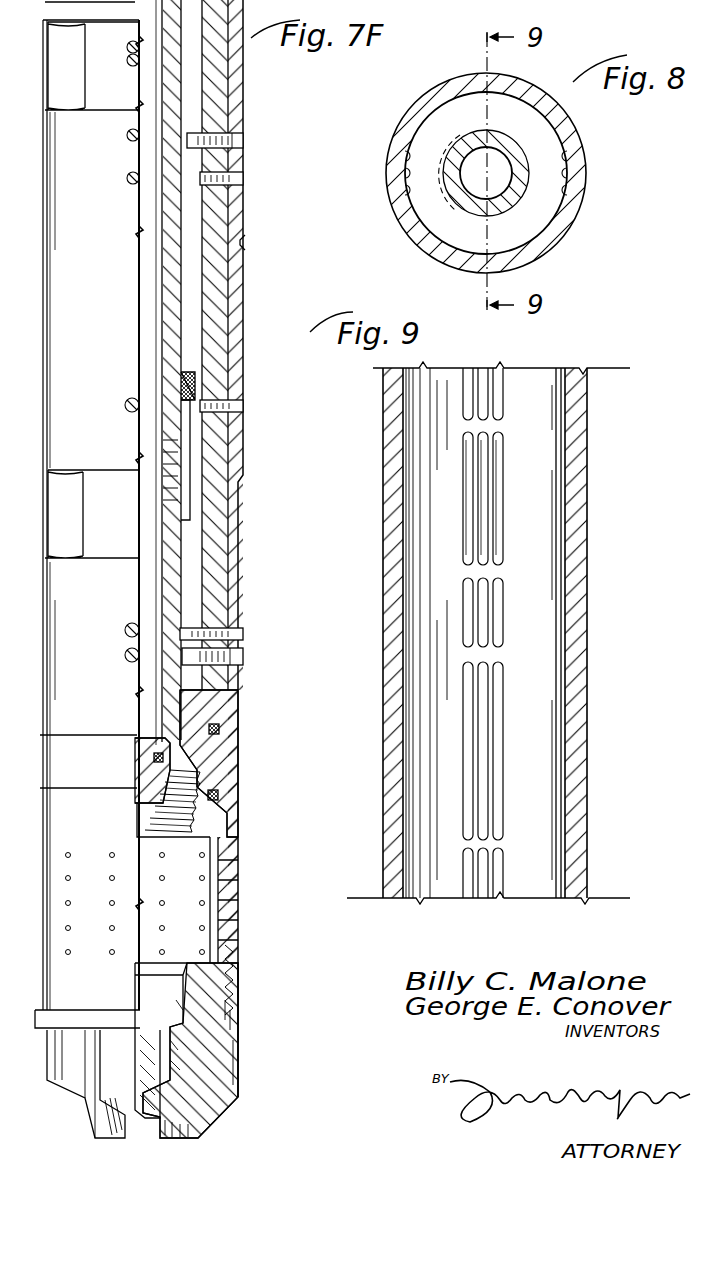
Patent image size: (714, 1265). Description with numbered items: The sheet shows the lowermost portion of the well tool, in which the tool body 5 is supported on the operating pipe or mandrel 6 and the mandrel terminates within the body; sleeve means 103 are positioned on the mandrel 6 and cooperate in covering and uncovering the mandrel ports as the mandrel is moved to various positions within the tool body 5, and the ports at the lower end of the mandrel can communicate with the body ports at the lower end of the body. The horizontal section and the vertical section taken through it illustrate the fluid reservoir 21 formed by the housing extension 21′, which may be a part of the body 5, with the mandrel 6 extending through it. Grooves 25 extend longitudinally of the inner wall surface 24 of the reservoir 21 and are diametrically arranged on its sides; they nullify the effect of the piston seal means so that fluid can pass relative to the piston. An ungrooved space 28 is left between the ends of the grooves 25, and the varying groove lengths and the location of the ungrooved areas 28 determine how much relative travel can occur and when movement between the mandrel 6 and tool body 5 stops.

In FIG. 7F, the tool body 5 is at (232, 610).
In FIG. 7F, the operating pipe or mandrel 6 is at (170, 705).
In FIG. 8, the operating pipe or mandrel 6 is at (502, 142).
In FIG. 7F, the sleeve means 103 is at (188, 522).
In FIG. 8, the fluid reservoir 21 is at (486, 173).
In FIG. 9, the fluid reservoir 21 is at (462, 633).
In FIG. 8, the housing extension 21′ is at (578, 153).
In FIG. 9, the housing extension 21′ is at (578, 455).
In FIG. 8, the inner wall surface 24 is at (537, 222).
In FIG. 9, the inner wall surface 24 is at (547, 515).
In FIG. 8, the grooves 25 is at (572, 173).
In FIG. 9, the grooves 25 is at (505, 495).
In FIG. 9, the ungrooved space 28 is at (498, 422).